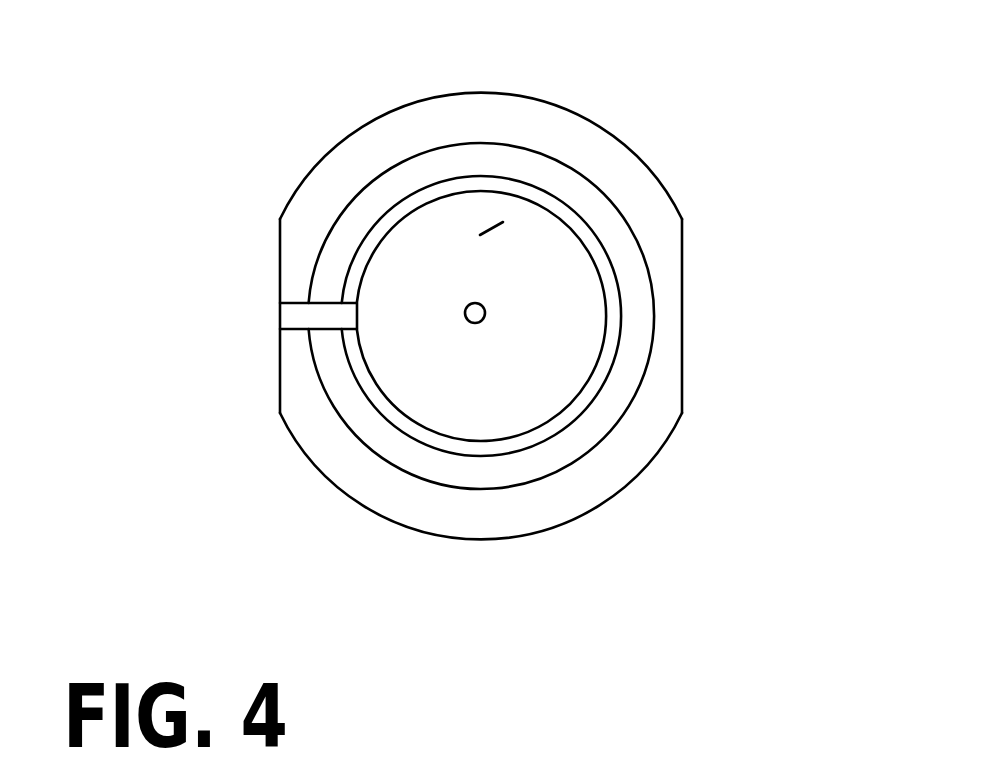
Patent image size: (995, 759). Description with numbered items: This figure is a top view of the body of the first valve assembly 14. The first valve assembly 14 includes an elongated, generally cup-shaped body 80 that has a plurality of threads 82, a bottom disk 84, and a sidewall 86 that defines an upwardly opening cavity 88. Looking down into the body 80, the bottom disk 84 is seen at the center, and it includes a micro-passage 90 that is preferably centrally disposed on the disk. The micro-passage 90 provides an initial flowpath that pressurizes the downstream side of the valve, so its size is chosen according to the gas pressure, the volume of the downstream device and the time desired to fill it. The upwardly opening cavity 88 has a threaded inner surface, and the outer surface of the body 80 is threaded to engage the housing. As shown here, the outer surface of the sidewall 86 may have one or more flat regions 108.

The first valve assembly 14 is at (280, 120).
The cup-shaped body 80 is at (405, 316).
The threads 82 is at (429, 385).
The bottom disk 84 is at (388, 343).
The sidewall 86 is at (534, 385).
The upwardly opening cavity 88 is at (590, 119).
The micro-passage 90 is at (505, 290).
The flat regions 108 is at (506, 308).